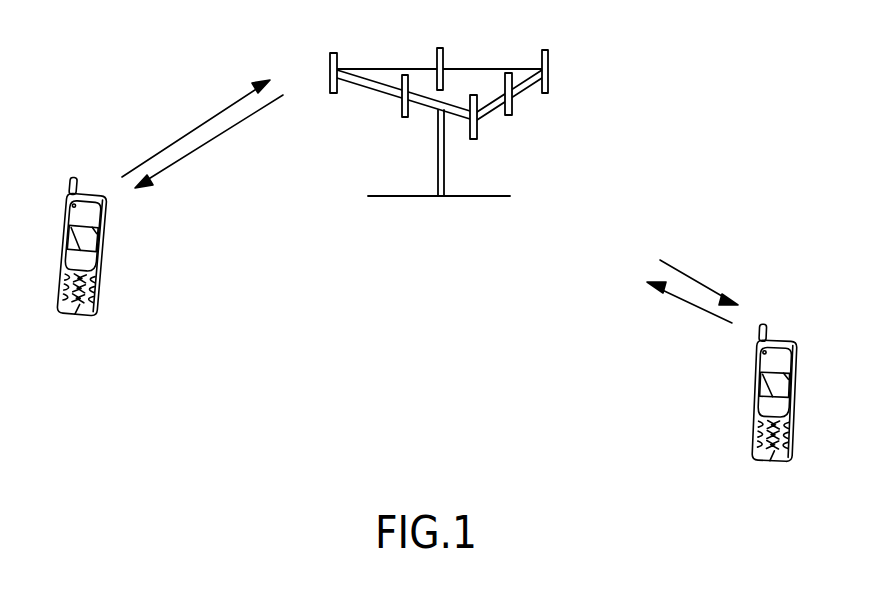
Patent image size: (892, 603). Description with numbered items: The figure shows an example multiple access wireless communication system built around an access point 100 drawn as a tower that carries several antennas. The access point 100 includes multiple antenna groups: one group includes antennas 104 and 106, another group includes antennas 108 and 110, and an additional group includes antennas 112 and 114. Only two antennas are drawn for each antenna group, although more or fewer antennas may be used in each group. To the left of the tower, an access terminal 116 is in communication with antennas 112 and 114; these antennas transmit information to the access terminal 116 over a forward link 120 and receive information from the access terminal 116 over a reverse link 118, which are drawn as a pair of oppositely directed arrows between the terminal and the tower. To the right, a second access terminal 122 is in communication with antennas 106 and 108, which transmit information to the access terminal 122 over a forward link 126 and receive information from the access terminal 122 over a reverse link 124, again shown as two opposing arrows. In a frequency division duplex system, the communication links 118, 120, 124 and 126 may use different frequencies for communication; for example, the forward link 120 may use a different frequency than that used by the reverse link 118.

The access point 100 is at (420, 196).
The antenna 104 is at (473, 139).
The antenna 106 is at (509, 115).
The antenna 108 is at (548, 75).
The antenna 110 is at (441, 47).
The antenna 112 is at (337, 63).
The antenna 114 is at (405, 117).
The access terminal 116 is at (90, 189).
The reverse link 118 is at (197, 125).
The forward link 120 is at (217, 138).
The access terminal 122 is at (777, 338).
The reverse link 124 is at (680, 297).
The forward link 126 is at (702, 282).